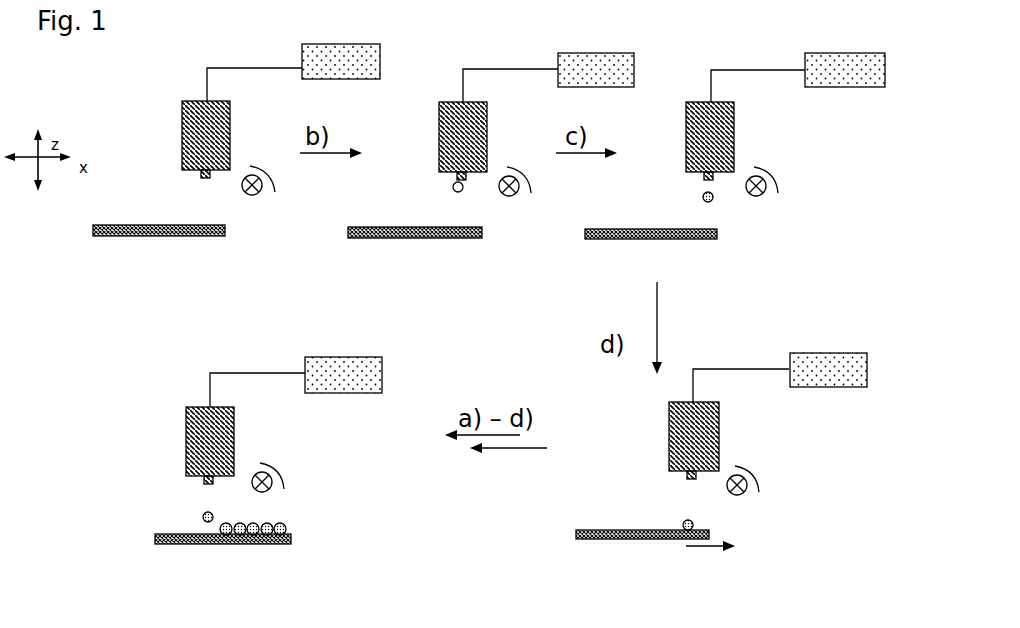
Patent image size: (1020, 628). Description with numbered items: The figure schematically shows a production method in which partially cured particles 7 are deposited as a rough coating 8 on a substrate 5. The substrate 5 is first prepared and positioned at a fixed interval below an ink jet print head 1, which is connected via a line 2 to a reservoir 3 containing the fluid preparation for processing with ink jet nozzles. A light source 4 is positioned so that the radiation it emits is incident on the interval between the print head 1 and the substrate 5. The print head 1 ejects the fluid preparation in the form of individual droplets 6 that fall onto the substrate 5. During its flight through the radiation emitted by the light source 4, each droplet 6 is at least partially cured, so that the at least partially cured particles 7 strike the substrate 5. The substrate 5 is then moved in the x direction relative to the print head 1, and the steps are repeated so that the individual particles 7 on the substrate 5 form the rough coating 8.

The ink jet print head 1 is at (182, 136).
The line 2 is at (240, 66).
The reservoir 3 is at (380, 47).
The light source 4 is at (257, 194).
The substrate 5 is at (158, 237).
The droplet 6 is at (467, 184).
The partially cured particle 7 is at (714, 198).
The rough coating 8 is at (296, 529).